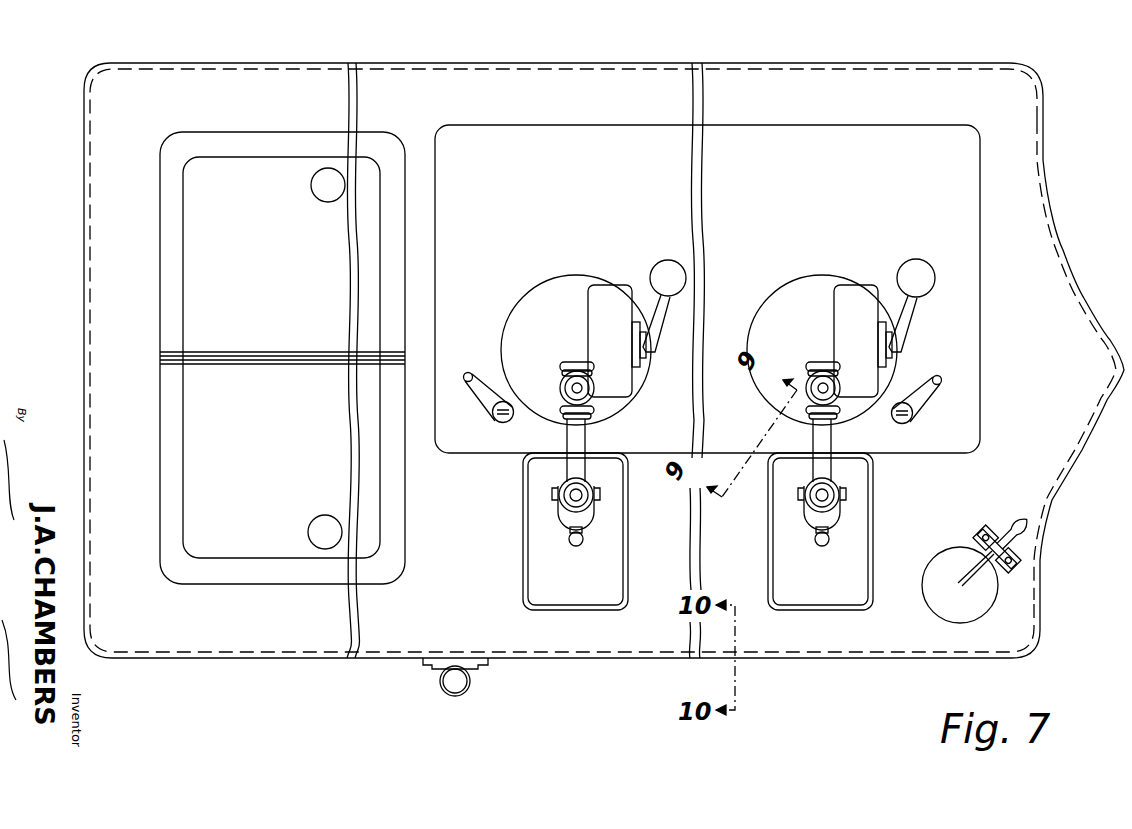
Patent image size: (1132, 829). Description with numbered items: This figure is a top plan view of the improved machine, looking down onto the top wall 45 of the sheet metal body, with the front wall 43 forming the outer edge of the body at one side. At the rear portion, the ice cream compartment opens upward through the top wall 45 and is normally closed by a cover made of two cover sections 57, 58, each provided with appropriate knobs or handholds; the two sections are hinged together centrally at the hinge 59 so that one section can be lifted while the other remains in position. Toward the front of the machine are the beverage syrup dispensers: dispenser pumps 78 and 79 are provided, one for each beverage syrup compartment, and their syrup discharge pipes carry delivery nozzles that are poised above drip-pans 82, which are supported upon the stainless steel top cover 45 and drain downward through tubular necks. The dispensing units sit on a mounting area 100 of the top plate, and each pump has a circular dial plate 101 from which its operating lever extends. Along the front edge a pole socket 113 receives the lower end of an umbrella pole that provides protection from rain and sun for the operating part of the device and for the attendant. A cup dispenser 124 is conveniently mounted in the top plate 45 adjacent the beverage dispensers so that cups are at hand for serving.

The front wall 43 is at (1073, 293).
The top wall 45 is at (130, 275).
The cover section 57 is at (205, 190).
The cover section 58 is at (200, 415).
The hinge 59 is at (175, 360).
The dispenser pump 78 is at (625, 297).
The dispenser pump 79 is at (870, 297).
The drip-pan 82 is at (545, 598).
The mounting panel 100 is at (522, 137).
The dial plate 101 is at (567, 290).
The pole socket 113 is at (445, 675).
The cup dispenser 124 is at (980, 605).